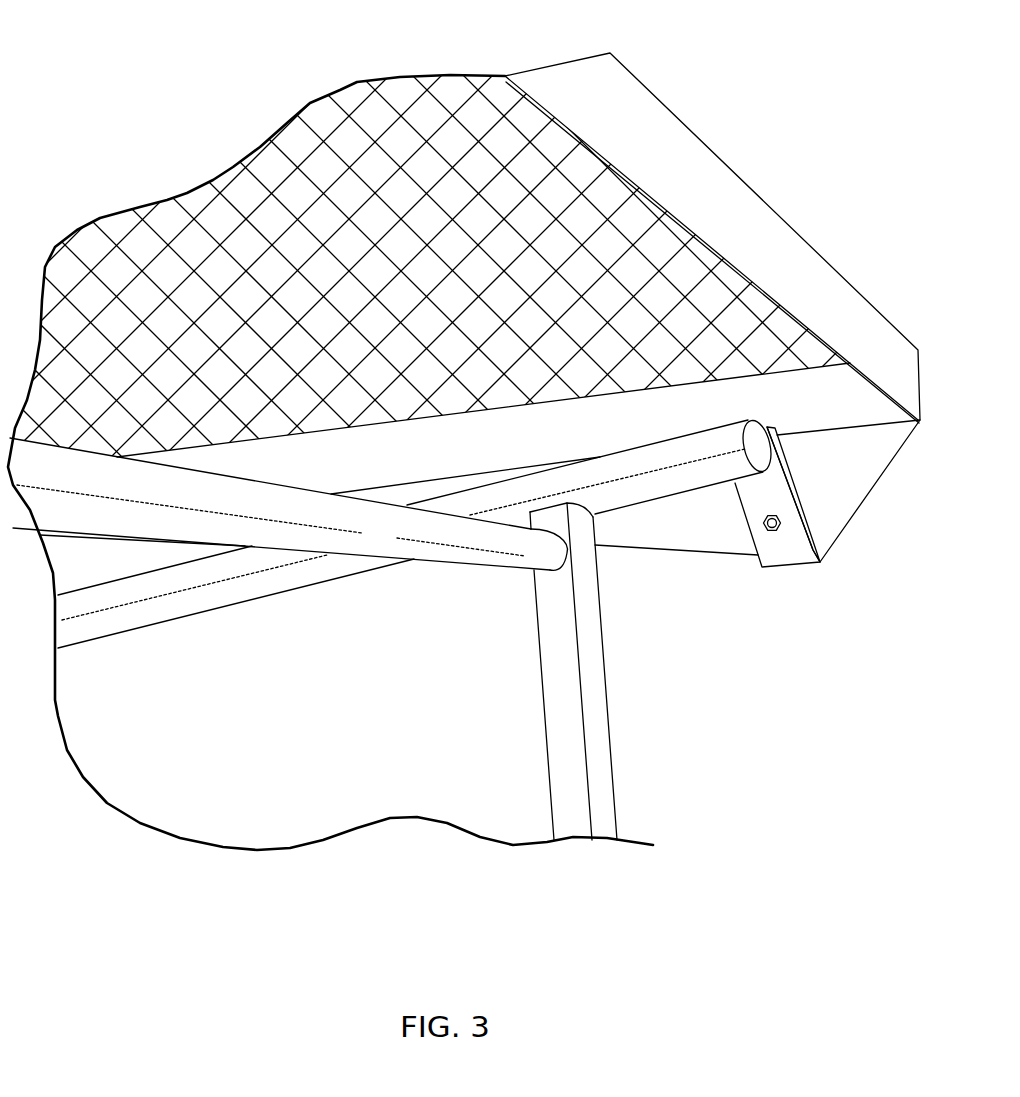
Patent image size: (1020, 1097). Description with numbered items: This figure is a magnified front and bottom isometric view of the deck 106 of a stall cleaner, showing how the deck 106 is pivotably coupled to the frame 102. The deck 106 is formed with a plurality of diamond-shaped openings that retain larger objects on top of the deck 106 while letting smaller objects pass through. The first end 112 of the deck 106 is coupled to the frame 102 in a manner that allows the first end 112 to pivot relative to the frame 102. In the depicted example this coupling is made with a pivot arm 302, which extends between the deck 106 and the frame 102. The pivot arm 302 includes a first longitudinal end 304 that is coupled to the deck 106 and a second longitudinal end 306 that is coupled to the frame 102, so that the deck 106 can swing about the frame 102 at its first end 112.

The frame 102 is at (607, 510).
The deck 106 is at (151, 60).
The first end 112 is at (812, 179).
The pivot arm 302 is at (738, 517).
The first longitudinal end 304 is at (775, 568).
The second longitudinal end 306 is at (778, 455).